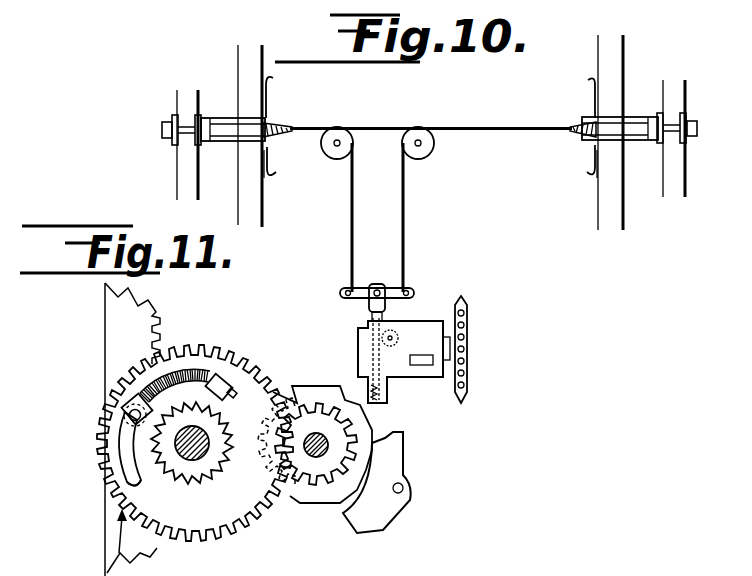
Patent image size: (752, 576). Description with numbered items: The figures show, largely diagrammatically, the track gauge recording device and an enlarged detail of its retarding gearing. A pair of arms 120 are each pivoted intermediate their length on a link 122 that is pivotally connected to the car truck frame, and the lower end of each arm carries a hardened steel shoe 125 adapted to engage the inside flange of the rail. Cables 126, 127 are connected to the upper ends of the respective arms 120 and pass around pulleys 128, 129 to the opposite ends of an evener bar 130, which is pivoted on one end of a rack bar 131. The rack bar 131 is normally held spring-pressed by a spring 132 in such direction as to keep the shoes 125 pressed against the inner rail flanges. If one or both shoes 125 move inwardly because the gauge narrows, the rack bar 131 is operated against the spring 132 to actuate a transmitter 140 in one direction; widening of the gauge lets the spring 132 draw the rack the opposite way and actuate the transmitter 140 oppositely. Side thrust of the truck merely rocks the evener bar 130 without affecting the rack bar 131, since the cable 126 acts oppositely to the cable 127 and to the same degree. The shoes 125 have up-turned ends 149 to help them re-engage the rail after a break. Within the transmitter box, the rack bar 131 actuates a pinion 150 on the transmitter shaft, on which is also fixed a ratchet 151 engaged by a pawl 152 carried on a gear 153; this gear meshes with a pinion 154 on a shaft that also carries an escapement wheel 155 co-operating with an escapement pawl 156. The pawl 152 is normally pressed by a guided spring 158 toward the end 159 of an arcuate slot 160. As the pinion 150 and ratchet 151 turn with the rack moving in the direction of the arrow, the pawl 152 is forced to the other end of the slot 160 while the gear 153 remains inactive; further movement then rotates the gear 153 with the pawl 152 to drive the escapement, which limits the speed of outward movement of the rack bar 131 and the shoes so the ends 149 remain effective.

In FIG. 10, the arm 120 is at (273, 127).
In FIG. 10, the link 122 is at (212, 142).
In FIG. 10, the shoe 125 is at (269, 145).
In FIG. 10, the cable 126 is at (475, 126).
In FIG. 11, the cable 126 is at (434, 564).
In FIG. 10, the cable 127 is at (354, 159).
In FIG. 10, the pulley 128 is at (432, 152).
In FIG. 10, the pulley 129 is at (327, 163).
In FIG. 10, the evener bar 130 is at (364, 292).
In FIG. 10, the rack bar 131 is at (372, 318).
In FIG. 11, the rack bar 131 is at (112, 346).
In FIG. 10, the spring 132 is at (388, 387).
In FIG. 10, the transmitter 140 is at (415, 329).
In FIG. 10, the up-turned end 149 is at (265, 181).
In FIG. 10, the pinion 150 is at (398, 338).
In FIG. 11, the pinion 150 is at (258, 466).
In FIG. 11, the ratchet 151 is at (200, 481).
In FIG. 11, the pawl 152 is at (123, 440).
In FIG. 11, the gear 153 is at (193, 358).
In FIG. 11, the pinion 154 is at (306, 498).
In FIG. 11, the escapement wheel 155 is at (323, 387).
In FIG. 11, the escapement pawl 156 is at (404, 450).
In FIG. 11, the spring 158 is at (203, 374).
In FIG. 11, the end of arcuate slot 159 is at (125, 410).
In FIG. 11, the arcuate slot 160 is at (130, 478).